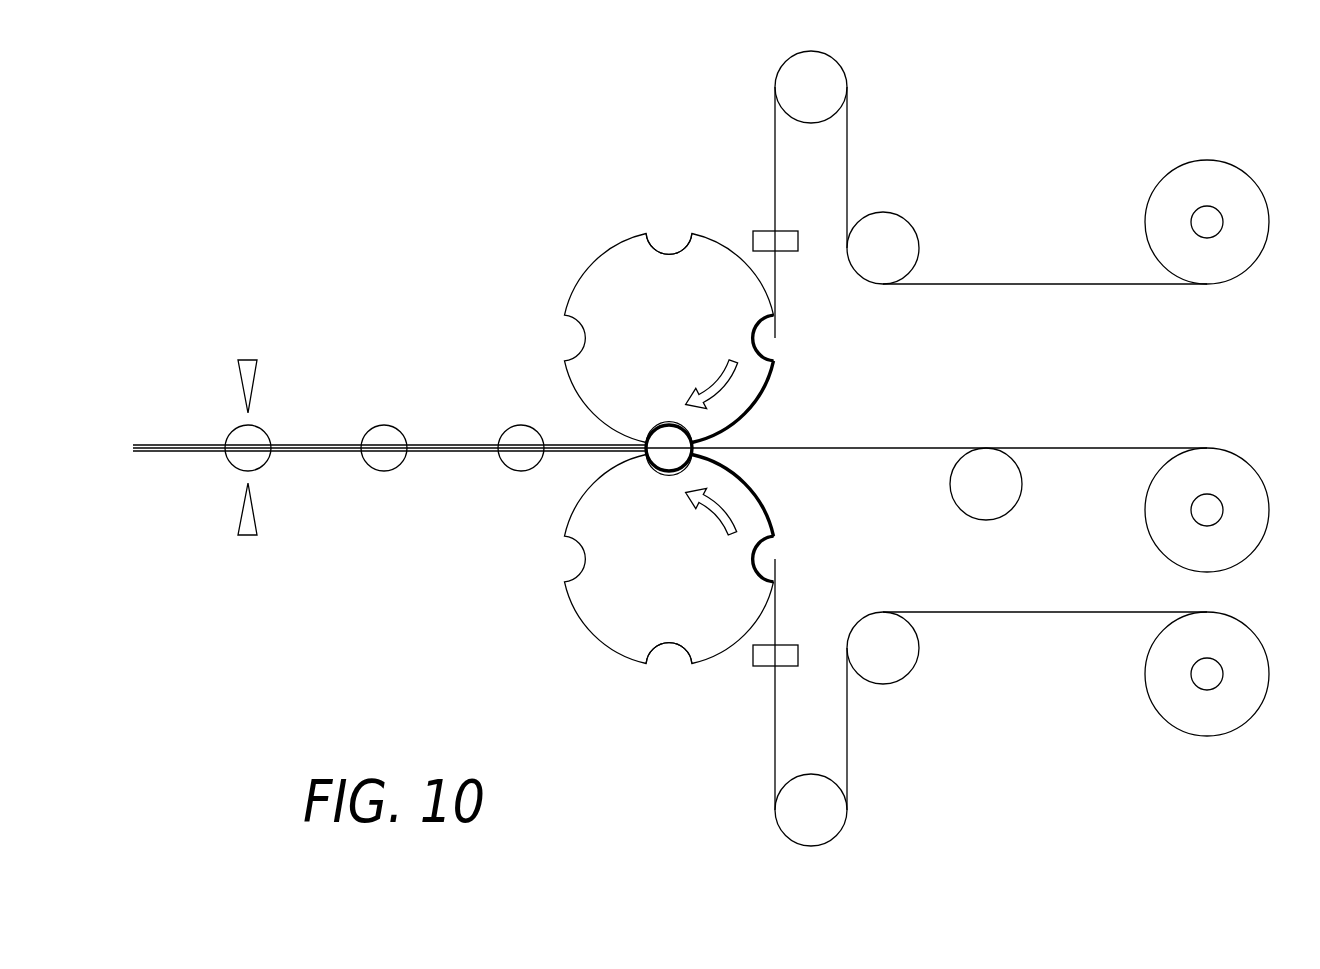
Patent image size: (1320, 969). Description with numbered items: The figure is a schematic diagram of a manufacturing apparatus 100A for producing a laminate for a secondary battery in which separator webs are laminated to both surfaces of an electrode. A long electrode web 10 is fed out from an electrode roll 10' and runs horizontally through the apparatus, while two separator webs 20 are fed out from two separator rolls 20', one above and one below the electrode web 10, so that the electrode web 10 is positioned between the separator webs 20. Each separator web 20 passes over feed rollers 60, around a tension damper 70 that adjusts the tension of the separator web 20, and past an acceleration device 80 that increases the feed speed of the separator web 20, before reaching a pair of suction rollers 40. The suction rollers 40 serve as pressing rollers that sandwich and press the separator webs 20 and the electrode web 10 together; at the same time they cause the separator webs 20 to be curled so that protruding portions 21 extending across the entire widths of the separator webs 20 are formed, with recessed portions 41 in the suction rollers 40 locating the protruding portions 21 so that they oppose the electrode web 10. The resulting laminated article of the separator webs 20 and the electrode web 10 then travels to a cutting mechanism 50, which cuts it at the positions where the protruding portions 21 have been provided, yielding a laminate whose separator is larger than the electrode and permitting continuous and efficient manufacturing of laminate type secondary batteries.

The manufacturing apparatus 100A is at (419, 213).
The electrode web 10 is at (926, 417).
The electrode roll 10' is at (1174, 510).
The separator web 20 is at (1045, 451).
The separator roll 20' is at (1207, 452).
The protruding portion 21 is at (508, 419).
The suction roller 40 is at (684, 349).
The recessed portion 41 is at (665, 247).
The cutting mechanism 50 is at (248, 360).
The feed roller 60 is at (898, 214).
The tension damper 70 is at (826, 86).
The acceleration device 80 is at (792, 246).